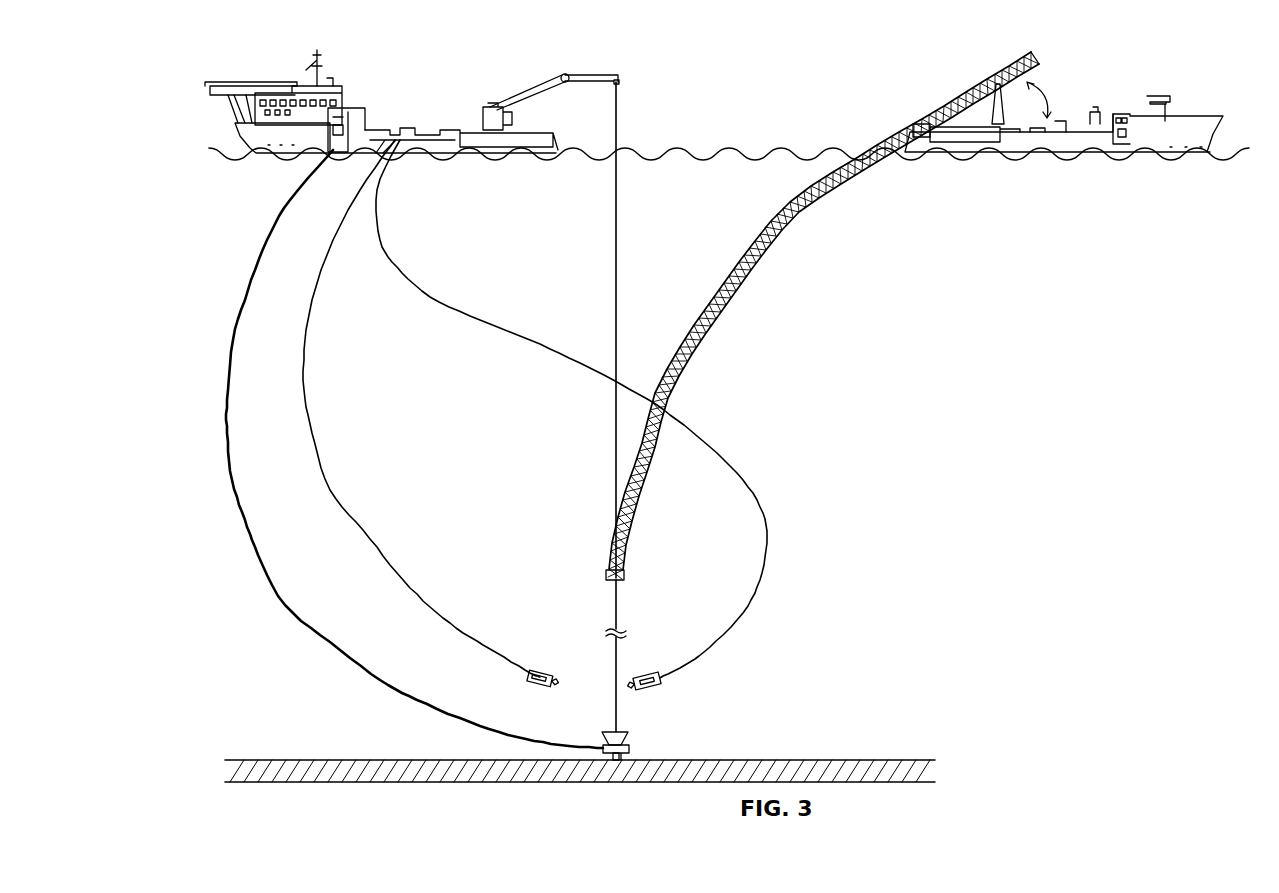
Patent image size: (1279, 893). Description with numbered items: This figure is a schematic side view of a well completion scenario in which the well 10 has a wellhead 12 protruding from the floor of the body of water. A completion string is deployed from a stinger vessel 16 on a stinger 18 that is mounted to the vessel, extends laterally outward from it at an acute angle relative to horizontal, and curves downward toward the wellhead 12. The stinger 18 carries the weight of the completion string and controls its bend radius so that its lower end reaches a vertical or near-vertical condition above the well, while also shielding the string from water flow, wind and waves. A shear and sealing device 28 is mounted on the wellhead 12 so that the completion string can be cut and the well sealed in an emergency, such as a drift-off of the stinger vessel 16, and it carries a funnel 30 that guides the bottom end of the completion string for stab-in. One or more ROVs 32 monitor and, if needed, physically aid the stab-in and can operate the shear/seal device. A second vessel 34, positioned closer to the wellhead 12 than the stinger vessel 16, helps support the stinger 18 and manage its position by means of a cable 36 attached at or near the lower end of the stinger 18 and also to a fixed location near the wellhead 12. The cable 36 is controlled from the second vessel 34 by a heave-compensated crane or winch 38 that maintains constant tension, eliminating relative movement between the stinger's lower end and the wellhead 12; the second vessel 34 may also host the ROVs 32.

The well 10 is at (648, 756).
The wellhead 12 is at (605, 762).
The stinger vessel 16 is at (1138, 61).
The stinger 18 is at (765, 230).
The shear and sealing device 28 is at (627, 746).
The funnel 30 is at (606, 733).
The ROVs 32 is at (541, 672).
The second vessel 34 is at (420, 97).
The cable 36 is at (620, 300).
The heave-compensated crane or winch 38 is at (560, 78).